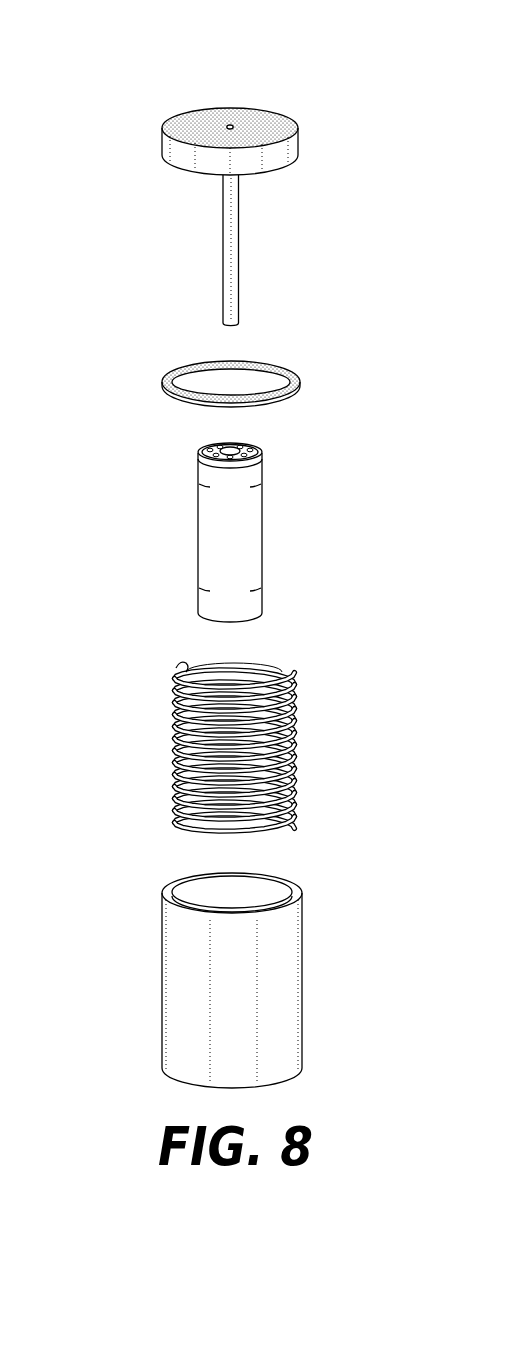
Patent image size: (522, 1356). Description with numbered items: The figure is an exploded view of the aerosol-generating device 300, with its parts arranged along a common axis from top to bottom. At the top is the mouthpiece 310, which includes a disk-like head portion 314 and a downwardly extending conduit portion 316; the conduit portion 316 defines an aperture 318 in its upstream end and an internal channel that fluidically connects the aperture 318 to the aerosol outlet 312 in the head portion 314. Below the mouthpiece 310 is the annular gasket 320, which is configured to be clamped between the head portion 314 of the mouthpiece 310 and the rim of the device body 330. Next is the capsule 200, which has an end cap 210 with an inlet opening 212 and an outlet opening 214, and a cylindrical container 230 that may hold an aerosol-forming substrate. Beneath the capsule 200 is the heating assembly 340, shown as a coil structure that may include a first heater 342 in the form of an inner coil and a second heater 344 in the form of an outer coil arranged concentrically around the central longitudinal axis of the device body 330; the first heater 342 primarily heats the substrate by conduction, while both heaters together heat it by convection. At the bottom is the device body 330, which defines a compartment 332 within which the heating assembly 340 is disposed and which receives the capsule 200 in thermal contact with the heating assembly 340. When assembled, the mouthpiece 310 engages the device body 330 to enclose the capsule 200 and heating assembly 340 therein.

The aerosol-generating device 300 is at (203, 33).
The mouthpiece 310 is at (152, 121).
The aerosol outlet 312 is at (231, 127).
The head portion 314 is at (295, 155).
The conduit portion 316 is at (228, 228).
The aperture 318 is at (235, 313).
The gasket 320 is at (155, 358).
The capsule 200 is at (170, 493).
The end cap 210 is at (198, 453).
The inlet opening 212 is at (260, 453).
The outlet opening 214 is at (232, 452).
The container 230 is at (255, 538).
The heating assembly 340 is at (156, 725).
The first heater 342 is at (270, 672).
The second heater 344 is at (288, 677).
The device body 330 is at (141, 963).
The compartment 332 is at (268, 890).